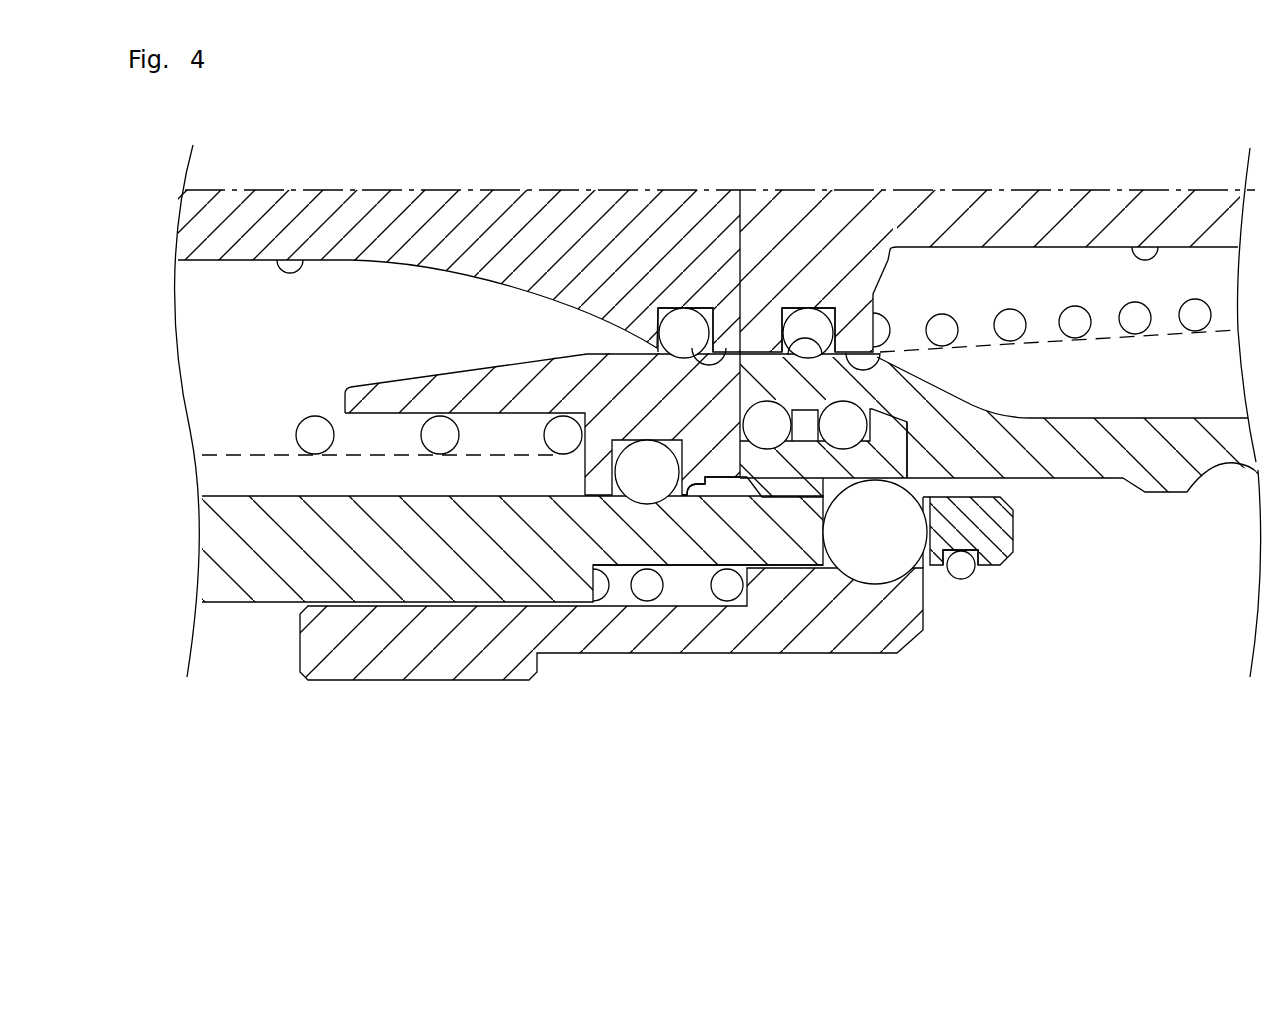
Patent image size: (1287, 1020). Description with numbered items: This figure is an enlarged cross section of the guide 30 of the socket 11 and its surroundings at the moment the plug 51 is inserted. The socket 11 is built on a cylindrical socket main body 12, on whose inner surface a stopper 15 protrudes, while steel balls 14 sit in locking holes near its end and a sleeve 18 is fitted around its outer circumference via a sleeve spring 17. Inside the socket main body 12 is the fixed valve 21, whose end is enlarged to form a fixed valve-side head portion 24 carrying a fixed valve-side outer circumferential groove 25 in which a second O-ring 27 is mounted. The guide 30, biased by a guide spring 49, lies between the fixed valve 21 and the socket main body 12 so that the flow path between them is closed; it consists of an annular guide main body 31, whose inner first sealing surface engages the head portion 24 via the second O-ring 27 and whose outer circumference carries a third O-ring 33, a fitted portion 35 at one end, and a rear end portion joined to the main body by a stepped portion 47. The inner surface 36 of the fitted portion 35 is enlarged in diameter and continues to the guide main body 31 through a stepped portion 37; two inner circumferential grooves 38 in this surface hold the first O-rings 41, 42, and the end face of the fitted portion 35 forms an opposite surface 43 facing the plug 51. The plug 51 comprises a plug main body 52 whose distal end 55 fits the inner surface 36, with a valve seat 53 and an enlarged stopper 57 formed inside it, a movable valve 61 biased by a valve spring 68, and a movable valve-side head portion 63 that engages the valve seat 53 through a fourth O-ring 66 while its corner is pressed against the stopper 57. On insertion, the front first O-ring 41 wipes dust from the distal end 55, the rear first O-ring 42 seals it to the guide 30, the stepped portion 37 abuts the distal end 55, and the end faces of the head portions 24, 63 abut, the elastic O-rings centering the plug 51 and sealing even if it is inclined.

The socket 11 is at (247, 619).
The socket main body 12 is at (270, 604).
The steel balls 14 is at (925, 562).
The stopper 15 is at (682, 520).
The sleeve spring 17 is at (642, 592).
The sleeve 18 is at (372, 682).
The fixed valve 21 is at (305, 272).
The fixed valve-side head portion 24 is at (700, 305).
The fixed valve-side outer circumferential groove 25 is at (736, 352).
The second O-ring 27 is at (662, 310).
The guide 30 is at (760, 482).
The guide main body 31 is at (700, 500).
The third O-ring 33 is at (628, 482).
The fitted portion 35 is at (893, 440).
The inner surface 36 is at (890, 393).
The stepped portion 37 is at (768, 305).
The inner circumferential grooves 38 is at (758, 432).
The first O-ring 41 is at (888, 592).
The first O-ring 42 is at (830, 440).
The opposite surface 43 is at (978, 532).
The stepped portion 47 is at (577, 473).
The guide spring 49 is at (437, 453).
The plug 51 is at (1170, 513).
The plug main body 52 is at (1133, 480).
The valve seat 53 is at (958, 572).
The distal end 55 is at (903, 560).
The stopper 57 is at (838, 330).
The movable valve 61 is at (1128, 256).
The movable valve-side head portion 63 is at (883, 325).
The fourth O-ring 66 is at (800, 340).
The valve spring 68 is at (1192, 332).